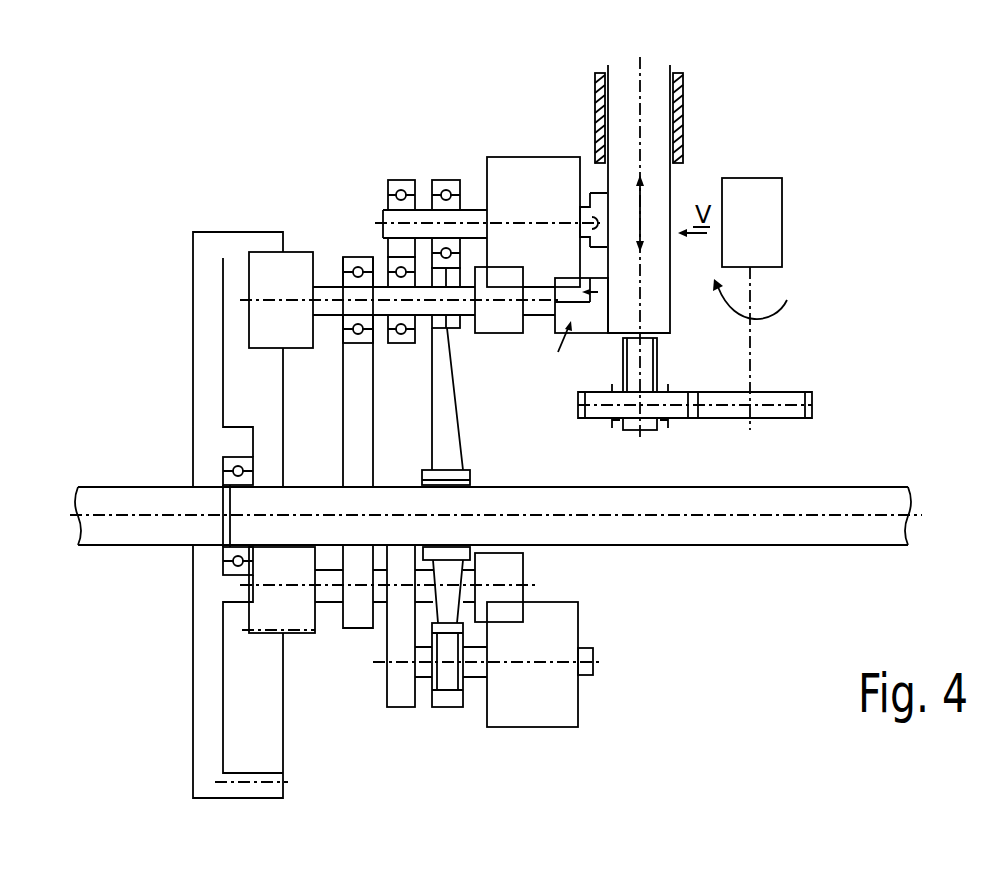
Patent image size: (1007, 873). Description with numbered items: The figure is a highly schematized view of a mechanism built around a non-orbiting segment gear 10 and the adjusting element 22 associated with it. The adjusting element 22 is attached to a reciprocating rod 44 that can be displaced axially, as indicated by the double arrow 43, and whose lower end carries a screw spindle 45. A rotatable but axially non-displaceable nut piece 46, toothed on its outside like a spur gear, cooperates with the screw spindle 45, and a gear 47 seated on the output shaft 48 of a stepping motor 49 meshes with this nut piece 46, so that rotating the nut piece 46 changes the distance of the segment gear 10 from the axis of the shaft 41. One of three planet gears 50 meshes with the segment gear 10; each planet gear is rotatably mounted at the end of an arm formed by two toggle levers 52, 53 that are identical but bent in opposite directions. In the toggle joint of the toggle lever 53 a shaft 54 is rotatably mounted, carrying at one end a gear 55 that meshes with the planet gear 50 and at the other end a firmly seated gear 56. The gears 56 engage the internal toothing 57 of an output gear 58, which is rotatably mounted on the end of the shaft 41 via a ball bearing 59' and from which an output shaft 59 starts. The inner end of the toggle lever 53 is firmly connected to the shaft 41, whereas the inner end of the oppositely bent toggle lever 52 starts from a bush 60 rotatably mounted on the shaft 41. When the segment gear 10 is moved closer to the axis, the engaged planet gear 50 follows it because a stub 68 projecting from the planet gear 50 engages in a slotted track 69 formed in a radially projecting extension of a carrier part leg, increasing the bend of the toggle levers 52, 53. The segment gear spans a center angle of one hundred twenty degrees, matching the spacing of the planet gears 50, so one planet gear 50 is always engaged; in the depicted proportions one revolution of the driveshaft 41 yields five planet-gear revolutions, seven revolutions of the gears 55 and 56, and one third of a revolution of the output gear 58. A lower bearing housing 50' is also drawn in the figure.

The segment gear 10 is at (610, 287).
The adjusting element 22 is at (556, 357).
The shaft 41 is at (673, 537).
The double arrow 43 is at (640, 197).
The reciprocating rod 44 is at (663, 100).
The screw spindle 45 is at (648, 364).
The nut piece 46 is at (597, 415).
The gear 47 is at (782, 415).
The output shaft 48 is at (752, 330).
The stepping motor 49 is at (770, 207).
The planet gear 50 is at (538, 440).
The bearing housing 50' is at (451, 706).
The toggle lever 52 is at (462, 410).
The toggle lever 53 is at (390, 248).
The shaft 54 is at (425, 310).
The gear 55 is at (500, 322).
The gear 56 is at (285, 330).
The internal toothing 57 is at (250, 772).
The output gear 58 is at (193, 628).
The output shaft 59 is at (135, 456).
The ball bearing 59' is at (275, 500).
The bush 60 is at (470, 478).
The stub 68 is at (583, 213).
The slotted track 69 is at (603, 230).